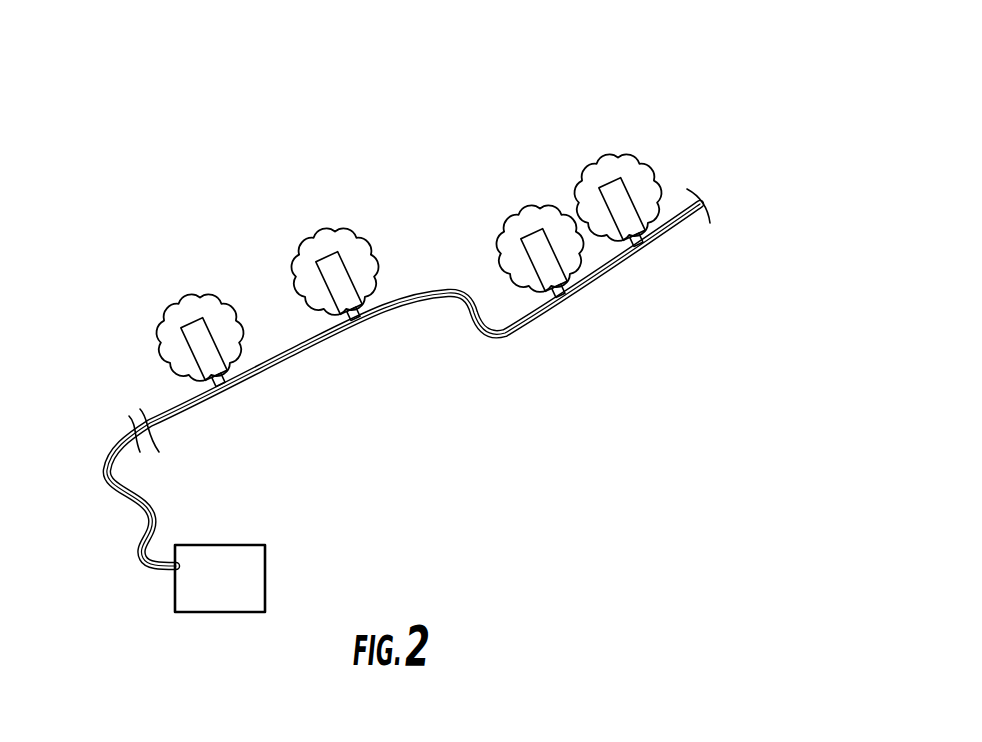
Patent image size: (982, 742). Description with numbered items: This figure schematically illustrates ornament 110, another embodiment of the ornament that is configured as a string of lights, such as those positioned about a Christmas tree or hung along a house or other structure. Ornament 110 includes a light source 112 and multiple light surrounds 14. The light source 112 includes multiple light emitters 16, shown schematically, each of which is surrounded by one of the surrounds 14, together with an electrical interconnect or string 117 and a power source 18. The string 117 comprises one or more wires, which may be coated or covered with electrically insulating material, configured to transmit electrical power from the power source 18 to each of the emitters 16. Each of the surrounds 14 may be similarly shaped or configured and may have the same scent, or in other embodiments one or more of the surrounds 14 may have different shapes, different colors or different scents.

The ornament 110 is at (393, 105).
The light source 112 is at (408, 377).
The electrical interconnect or string 117 is at (290, 357).
The light surround 14 is at (180, 296).
The light emitter 16 is at (205, 335).
The power source 18 is at (266, 566).